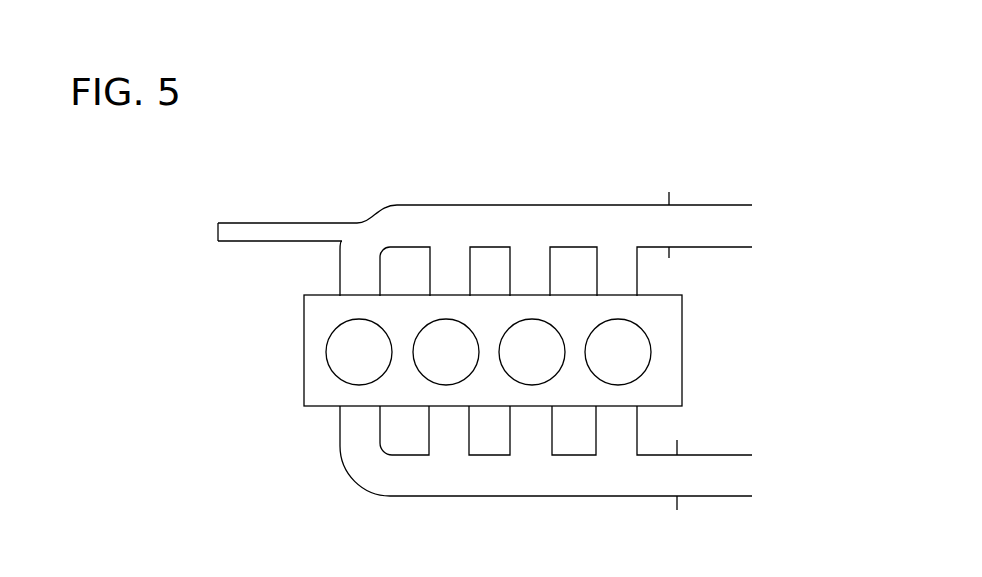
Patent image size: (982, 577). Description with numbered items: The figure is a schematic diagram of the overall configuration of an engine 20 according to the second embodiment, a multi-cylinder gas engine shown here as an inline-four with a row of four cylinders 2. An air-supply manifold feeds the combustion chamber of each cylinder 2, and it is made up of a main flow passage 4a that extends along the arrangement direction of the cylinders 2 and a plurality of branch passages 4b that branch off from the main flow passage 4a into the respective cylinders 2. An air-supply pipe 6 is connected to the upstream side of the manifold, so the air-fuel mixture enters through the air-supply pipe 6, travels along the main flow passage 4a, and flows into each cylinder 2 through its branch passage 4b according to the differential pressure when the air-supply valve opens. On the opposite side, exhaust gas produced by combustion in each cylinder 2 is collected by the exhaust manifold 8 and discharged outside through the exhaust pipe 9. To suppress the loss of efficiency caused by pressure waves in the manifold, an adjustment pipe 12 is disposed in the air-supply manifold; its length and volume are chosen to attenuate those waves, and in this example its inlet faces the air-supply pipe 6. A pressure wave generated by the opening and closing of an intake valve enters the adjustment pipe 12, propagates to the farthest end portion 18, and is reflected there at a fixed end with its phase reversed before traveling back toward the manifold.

The engine 20 is at (788, 149).
The cylinder 2 is at (326, 348).
The main flow passage 4a is at (488, 205).
The branch passage 4b is at (637, 277).
The air-supply pipe 6 is at (717, 205).
The exhaust manifold 8 is at (479, 497).
The exhaust pipe 9 is at (717, 497).
The adjustment pipe 12 is at (283, 223).
The farthest end portion 18 is at (217, 233).